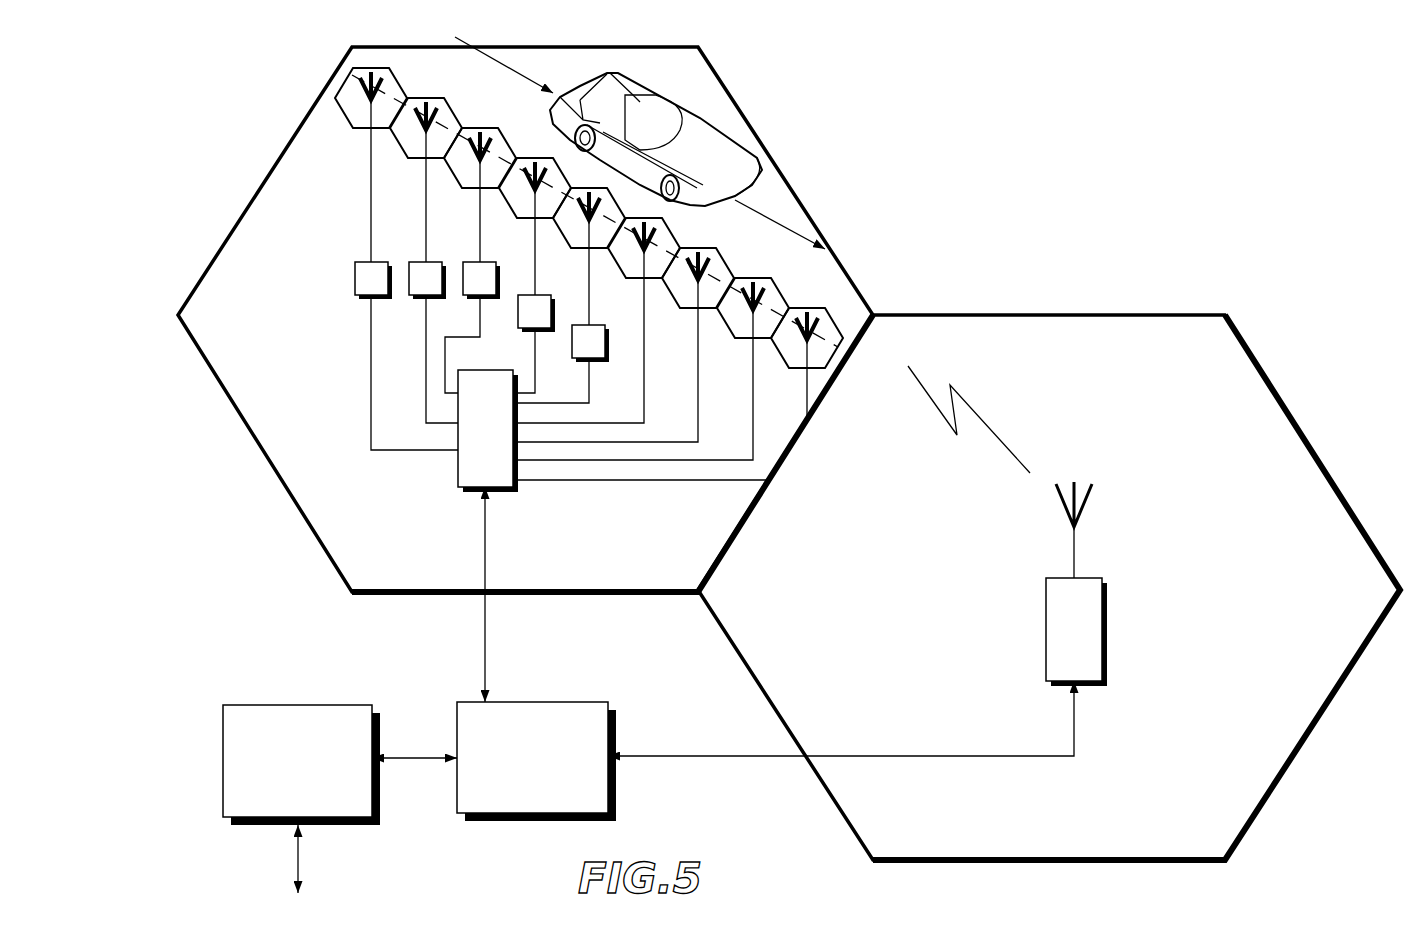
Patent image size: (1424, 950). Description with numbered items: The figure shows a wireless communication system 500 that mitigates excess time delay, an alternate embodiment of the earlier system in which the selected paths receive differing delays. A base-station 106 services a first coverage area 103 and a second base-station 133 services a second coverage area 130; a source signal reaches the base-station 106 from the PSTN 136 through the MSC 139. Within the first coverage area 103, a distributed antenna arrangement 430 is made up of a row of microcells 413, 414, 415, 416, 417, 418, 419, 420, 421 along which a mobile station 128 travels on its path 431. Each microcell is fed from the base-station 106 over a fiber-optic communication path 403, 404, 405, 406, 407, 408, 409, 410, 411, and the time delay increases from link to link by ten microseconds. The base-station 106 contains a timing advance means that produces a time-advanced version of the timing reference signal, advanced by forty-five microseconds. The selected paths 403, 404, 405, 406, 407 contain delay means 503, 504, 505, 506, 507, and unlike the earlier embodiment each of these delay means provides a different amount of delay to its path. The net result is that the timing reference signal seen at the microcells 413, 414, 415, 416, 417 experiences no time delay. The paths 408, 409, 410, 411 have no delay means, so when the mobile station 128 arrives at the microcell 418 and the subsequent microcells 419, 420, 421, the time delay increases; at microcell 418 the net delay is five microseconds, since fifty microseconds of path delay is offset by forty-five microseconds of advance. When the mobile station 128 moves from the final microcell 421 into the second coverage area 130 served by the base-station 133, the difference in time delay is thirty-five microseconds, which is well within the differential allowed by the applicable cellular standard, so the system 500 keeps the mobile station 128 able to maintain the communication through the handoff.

The first coverage area 103 is at (284, 155).
The base-station 106 is at (470, 492).
The mobile station 128 is at (720, 137).
The second coverage area 130 is at (990, 313).
The base-station 133 is at (1105, 598).
The PSTN 136 is at (365, 705).
The MSC 139 is at (612, 725).
The communication path 403 is at (374, 318).
The communication path 404 is at (428, 220).
The communication path 405 is at (481, 253).
The communication path 406 is at (537, 355).
The communication path 407 is at (592, 388).
The communication path 408 is at (645, 400).
The communication path 409 is at (700, 416).
The communication path 410 is at (755, 431).
The communication path 411 is at (728, 482).
The microcell 413 is at (360, 128).
The microcell 414 is at (424, 99).
The microcell 415 is at (485, 124).
The microcell 416 is at (527, 158).
The microcell 417 is at (610, 190).
The microcell 418 is at (667, 225).
The microcell 419 is at (718, 250).
The microcell 420 is at (758, 276).
The final microcell 421 is at (803, 316).
The distributed antenna arrangement 430 is at (362, 82).
The path of mobile vehicle 431 is at (350, 102).
The wireless communication system 500 is at (1228, 187).
The delay means 503 is at (358, 272).
The delay means 504 is at (426, 297).
The delay means 505 is at (482, 297).
The delay means 506 is at (556, 328).
The delay means 507 is at (612, 340).